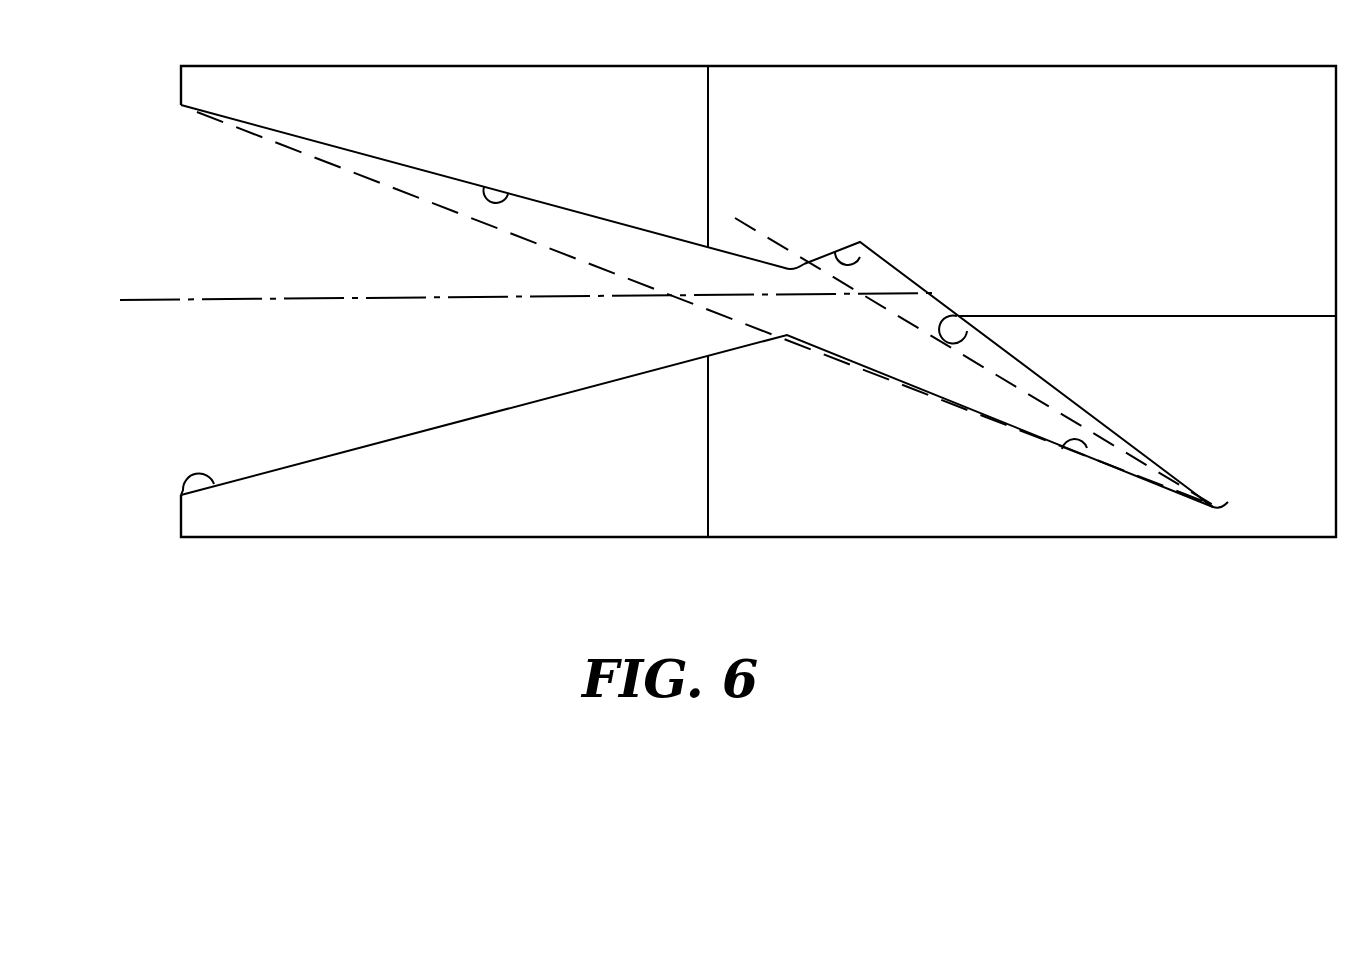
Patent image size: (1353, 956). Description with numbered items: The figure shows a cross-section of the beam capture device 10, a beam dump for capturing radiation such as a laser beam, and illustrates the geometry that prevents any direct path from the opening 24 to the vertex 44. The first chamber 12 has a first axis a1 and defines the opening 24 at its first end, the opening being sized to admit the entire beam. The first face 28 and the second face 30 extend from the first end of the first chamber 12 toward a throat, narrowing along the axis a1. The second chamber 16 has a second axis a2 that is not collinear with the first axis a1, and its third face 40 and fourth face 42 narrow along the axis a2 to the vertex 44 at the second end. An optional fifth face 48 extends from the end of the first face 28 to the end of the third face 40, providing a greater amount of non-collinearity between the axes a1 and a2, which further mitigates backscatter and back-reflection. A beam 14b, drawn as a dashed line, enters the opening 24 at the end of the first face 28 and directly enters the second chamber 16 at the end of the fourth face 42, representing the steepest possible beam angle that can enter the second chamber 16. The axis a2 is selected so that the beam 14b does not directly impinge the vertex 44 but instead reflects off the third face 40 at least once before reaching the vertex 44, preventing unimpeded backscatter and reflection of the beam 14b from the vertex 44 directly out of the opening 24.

The beam capture device 10 is at (1256, 563).
The first chamber 12 is at (187, 455).
The beam 14b is at (350, 178).
The second chamber 16 is at (997, 380).
The opening 24 is at (178, 168).
The first face 28 is at (512, 198).
The second face 30 is at (181, 490).
The third face 40 is at (954, 304).
The fourth face 42 is at (1089, 447).
The vertex 44 is at (1226, 504).
The fifth face 48 is at (868, 242).
The first axis a1 is at (127, 298).
The second axis a2 is at (740, 212).